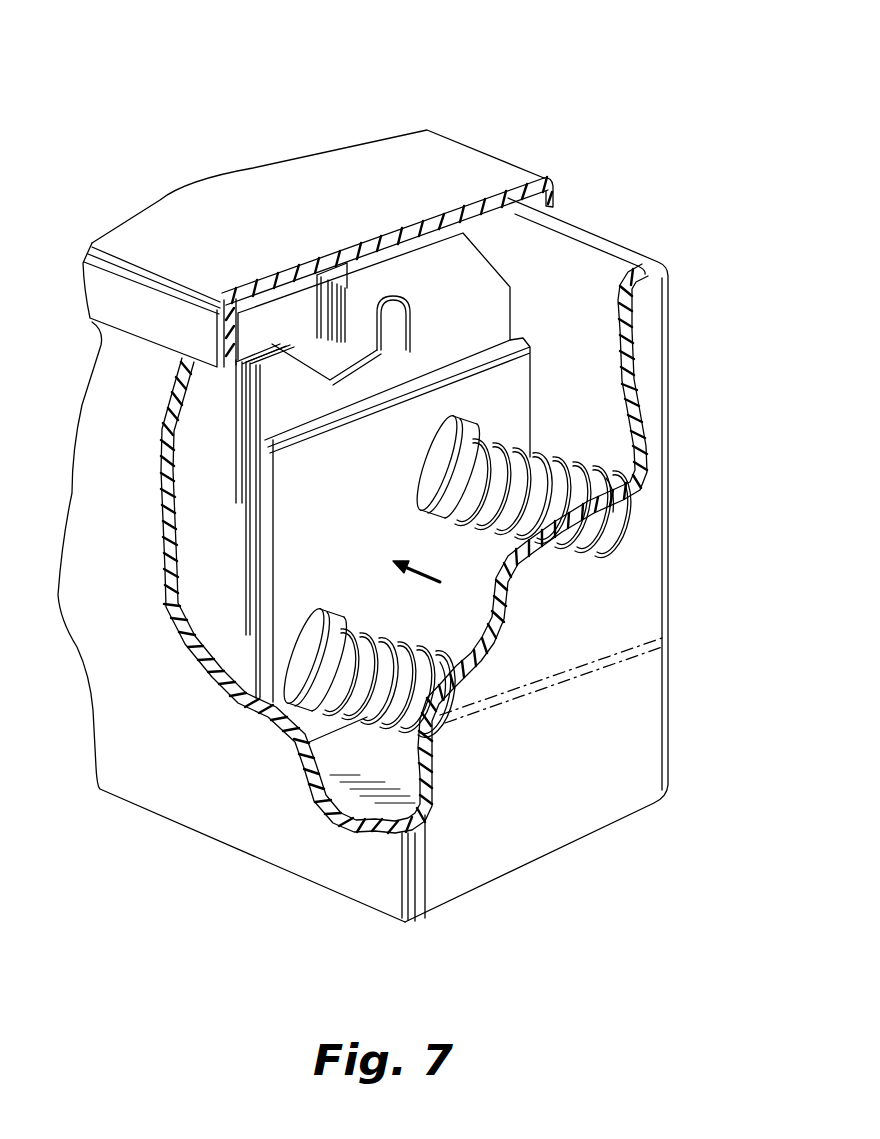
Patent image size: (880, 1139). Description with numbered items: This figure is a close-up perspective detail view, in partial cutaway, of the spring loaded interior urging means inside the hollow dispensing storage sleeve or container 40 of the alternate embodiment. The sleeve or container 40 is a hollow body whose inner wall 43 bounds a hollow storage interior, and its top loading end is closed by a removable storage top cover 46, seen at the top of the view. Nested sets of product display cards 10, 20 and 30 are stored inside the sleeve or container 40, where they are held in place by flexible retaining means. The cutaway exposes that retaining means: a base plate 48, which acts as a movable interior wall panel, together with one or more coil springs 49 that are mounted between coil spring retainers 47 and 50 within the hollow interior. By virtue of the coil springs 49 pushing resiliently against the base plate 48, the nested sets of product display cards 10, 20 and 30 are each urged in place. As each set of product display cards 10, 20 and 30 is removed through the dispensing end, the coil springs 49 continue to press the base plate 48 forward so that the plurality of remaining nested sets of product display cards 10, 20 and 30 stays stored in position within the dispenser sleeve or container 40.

The product display card 10 is at (235, 467).
The product display card 20 is at (242, 599).
The product display card 30 is at (484, 245).
The hollow dispensing storage sleeve 40 is at (617, 126).
The inner wall 43 is at (709, 252).
The removable storage top cover 46 is at (303, 178).
The coil spring retainer 47 is at (418, 468).
The base plate 48 is at (513, 377).
The coil spring 49 is at (551, 470).
The coil spring retainer 50 is at (598, 492).